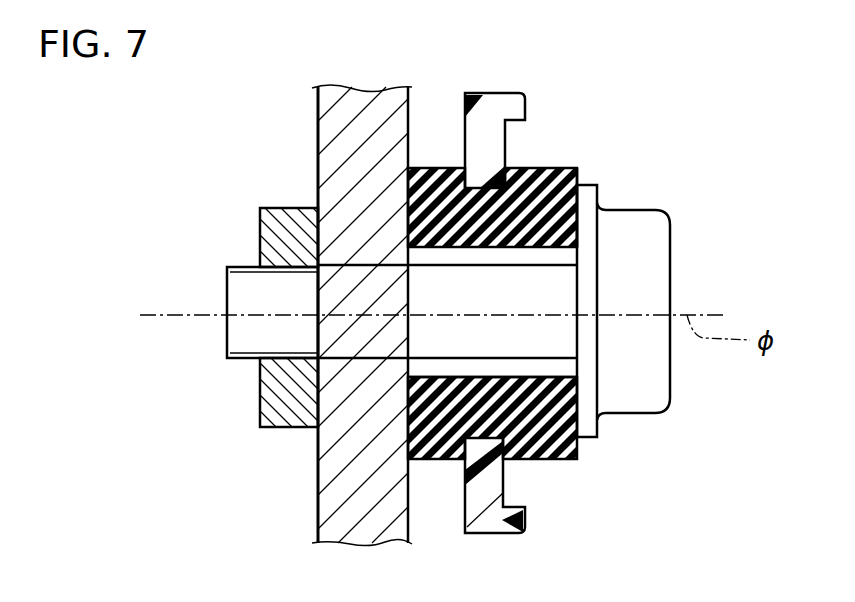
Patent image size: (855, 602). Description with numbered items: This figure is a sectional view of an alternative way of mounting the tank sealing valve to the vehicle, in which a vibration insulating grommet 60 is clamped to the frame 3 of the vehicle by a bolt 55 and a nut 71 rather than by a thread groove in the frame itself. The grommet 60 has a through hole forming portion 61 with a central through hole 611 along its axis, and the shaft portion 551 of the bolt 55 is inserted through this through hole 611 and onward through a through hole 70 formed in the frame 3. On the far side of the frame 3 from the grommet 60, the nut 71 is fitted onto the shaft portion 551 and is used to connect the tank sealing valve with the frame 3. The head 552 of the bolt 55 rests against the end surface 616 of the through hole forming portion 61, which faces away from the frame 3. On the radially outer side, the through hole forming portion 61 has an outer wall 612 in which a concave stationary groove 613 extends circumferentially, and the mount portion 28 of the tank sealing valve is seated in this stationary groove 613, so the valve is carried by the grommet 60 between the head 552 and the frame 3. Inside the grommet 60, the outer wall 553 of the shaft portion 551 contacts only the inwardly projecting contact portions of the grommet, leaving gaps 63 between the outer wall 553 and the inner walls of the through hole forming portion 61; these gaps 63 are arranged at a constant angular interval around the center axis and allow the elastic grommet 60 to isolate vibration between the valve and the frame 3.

The frame 3 is at (358, 105).
The mount portion 28 is at (482, 118).
The bolt 55 is at (495, 333).
The shaft portion 551 is at (548, 333).
The head 552 is at (645, 278).
The outer wall 553 is at (492, 265).
The grommet 60 is at (514, 306).
The through hole forming portion 61 is at (425, 168).
The through hole 611 is at (450, 375).
The outer wall 612 is at (536, 167).
The stationary groove 613 is at (480, 183).
The end surface 616 is at (578, 176).
The gaps 63 is at (562, 253).
The through hole 70 is at (392, 270).
The nut 71 is at (277, 398).